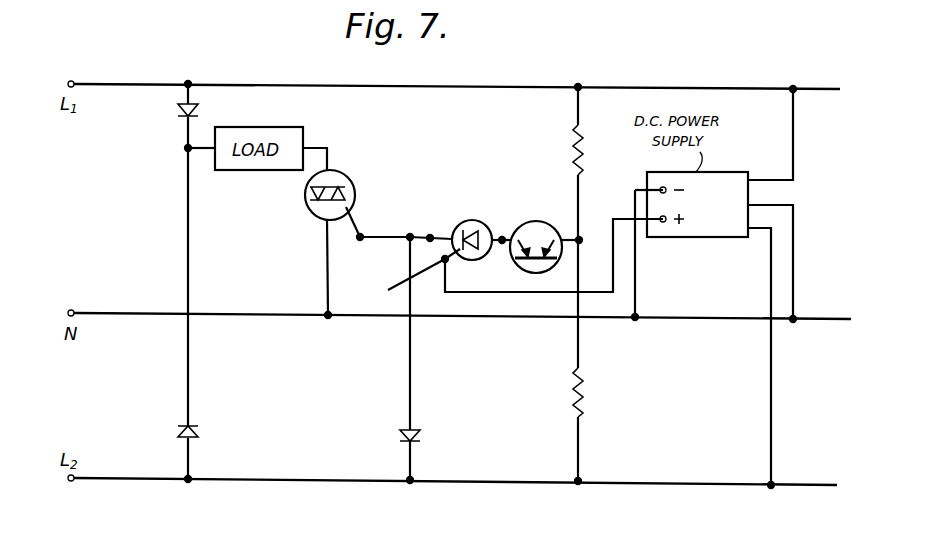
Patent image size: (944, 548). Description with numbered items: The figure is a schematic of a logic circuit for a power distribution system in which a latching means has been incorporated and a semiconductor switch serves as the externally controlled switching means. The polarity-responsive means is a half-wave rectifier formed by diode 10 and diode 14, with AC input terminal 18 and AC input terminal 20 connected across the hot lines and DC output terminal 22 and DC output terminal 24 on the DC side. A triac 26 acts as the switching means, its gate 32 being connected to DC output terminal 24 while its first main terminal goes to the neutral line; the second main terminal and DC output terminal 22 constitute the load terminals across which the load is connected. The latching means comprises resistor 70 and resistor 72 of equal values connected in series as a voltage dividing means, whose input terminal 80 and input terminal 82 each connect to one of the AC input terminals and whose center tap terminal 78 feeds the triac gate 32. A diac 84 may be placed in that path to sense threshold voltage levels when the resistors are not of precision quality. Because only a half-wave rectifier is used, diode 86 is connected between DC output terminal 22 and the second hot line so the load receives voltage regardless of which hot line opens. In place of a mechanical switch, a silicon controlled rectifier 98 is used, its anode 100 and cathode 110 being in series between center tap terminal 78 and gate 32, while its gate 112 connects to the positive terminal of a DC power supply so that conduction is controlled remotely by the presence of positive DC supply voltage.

The diode 10 is at (178, 113).
The diode 14 is at (420, 435).
The AC input terminal 18 is at (188, 84).
The AC input terminal 20 is at (410, 482).
The DC output terminal 22 is at (188, 148).
The DC output terminal 24 is at (410, 236).
The triac 26 is at (306, 195).
The gate 32 is at (360, 239).
The resistor 70 is at (577, 145).
The resistor 72 is at (588, 393).
The center tap terminal 78 is at (580, 238).
The input terminal 80 is at (578, 86).
The input terminal 82 is at (579, 484).
The diac 84 is at (521, 224).
The diode 86 is at (198, 434).
The silicon controlled rectifier 98 is at (458, 221).
The anode 100 is at (502, 244).
The cathode 110 is at (430, 236).
The gate 112 is at (410, 280).